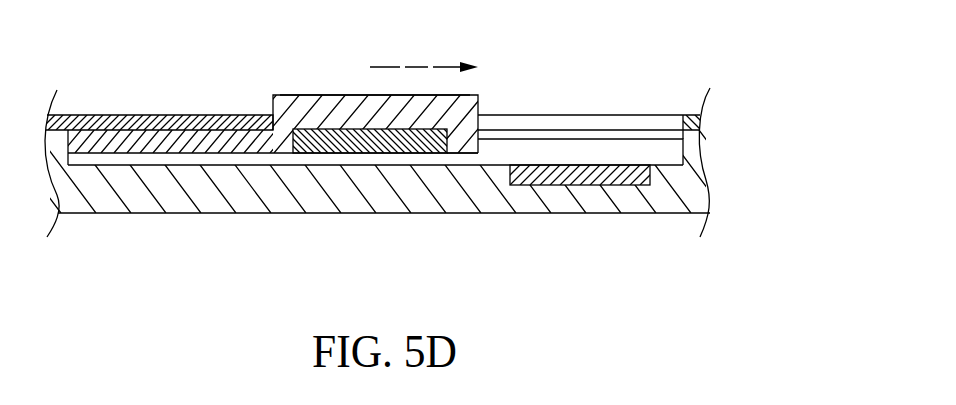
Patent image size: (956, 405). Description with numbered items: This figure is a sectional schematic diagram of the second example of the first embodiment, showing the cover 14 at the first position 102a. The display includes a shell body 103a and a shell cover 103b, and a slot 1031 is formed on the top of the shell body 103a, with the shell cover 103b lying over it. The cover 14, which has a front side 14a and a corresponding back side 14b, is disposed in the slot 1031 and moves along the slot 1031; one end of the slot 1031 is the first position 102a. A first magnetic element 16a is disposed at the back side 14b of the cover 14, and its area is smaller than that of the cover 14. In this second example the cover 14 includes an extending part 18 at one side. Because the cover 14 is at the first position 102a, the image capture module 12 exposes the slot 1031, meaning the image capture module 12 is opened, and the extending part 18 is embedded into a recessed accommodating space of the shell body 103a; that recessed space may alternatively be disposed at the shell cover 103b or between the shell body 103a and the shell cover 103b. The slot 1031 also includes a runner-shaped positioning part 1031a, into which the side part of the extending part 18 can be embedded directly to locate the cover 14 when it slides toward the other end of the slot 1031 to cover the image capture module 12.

The image capture module 12 is at (583, 172).
The cover 14 is at (345, 118).
The front side 14a is at (307, 95).
The back side 14b is at (462, 152).
The first magnetic element 16a is at (318, 140).
The extending part 18 is at (200, 143).
The first position 102a is at (391, 160).
The shell body 103a is at (125, 190).
The shell cover 103b is at (148, 122).
The slot 1031 is at (662, 150).
The positioning part 1031a is at (595, 135).